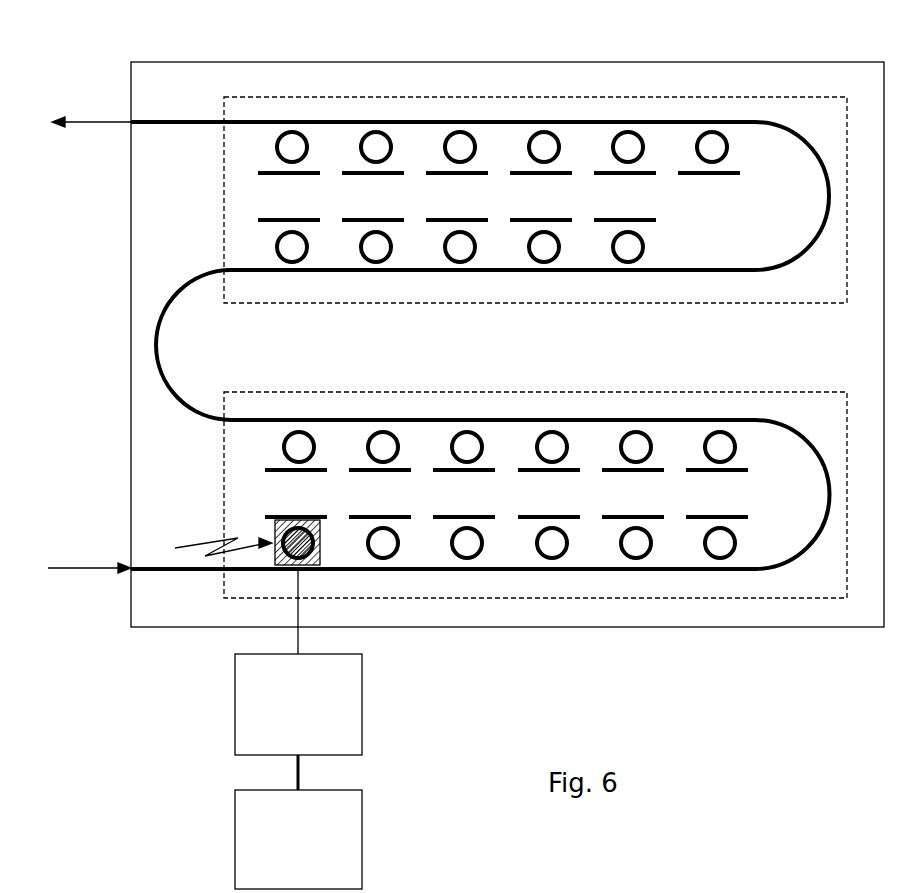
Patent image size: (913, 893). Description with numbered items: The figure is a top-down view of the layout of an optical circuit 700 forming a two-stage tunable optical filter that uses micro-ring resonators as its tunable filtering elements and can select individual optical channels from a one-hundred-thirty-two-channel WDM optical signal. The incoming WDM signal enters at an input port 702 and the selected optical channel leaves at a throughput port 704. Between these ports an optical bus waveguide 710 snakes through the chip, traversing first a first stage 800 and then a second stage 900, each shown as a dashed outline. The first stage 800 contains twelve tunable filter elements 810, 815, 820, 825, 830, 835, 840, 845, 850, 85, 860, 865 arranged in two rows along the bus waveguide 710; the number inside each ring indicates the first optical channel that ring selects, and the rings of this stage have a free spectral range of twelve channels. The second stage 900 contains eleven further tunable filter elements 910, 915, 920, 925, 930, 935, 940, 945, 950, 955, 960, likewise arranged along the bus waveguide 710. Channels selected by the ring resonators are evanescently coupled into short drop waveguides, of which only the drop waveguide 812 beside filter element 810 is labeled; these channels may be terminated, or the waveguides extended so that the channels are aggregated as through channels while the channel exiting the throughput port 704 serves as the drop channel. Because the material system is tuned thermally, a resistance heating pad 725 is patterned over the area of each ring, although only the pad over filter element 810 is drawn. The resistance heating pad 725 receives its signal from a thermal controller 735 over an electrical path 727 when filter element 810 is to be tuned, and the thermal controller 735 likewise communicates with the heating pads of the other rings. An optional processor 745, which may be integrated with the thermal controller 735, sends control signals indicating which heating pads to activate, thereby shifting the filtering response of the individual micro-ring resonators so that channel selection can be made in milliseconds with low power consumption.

The optical circuit 700 is at (835, 62).
The input port 702 is at (127, 570).
The throughput port 704 is at (130, 124).
The optical bus waveguide 710 is at (811, 144).
The resistance heating pad 725 is at (206, 547).
The electrical path 727 is at (298, 644).
The thermal controller 735 is at (235, 703).
The processor 745 is at (235, 830).
The first stage 800 is at (508, 598).
The tunable filter element 810 is at (300, 525).
The drop waveguide 812 is at (272, 515).
The tunable filter element 815 is at (386, 527).
The tunable filter element 820 is at (470, 527).
The tunable filter element 825 is at (555, 527).
The tunable filter element 830 is at (639, 527).
The tunable filter element 835 is at (723, 527).
The tunable filter element 840 is at (722, 431).
The tunable filter element 845 is at (638, 431).
The tunable filter element 850 is at (554, 431).
The heating zone 10 85 is at (469, 431).
The tunable filter element 860 is at (385, 431).
The tunable filter element 865 is at (301, 431).
The second stage 900 is at (417, 97).
The tunable filter element 910 is at (295, 263).
The tunable filter element 915 is at (379, 263).
The tunable filter element 920 is at (463, 263).
The tunable filter element 925 is at (547, 263).
The tunable filter element 930 is at (631, 263).
The tunable filter element 935 is at (716, 163).
The tunable filter element 940 is at (632, 163).
The tunable filter element 945 is at (548, 163).
The tunable filter element 950 is at (464, 163).
The tunable filter element 955 is at (380, 163).
The tunable filter element 960 is at (296, 163).